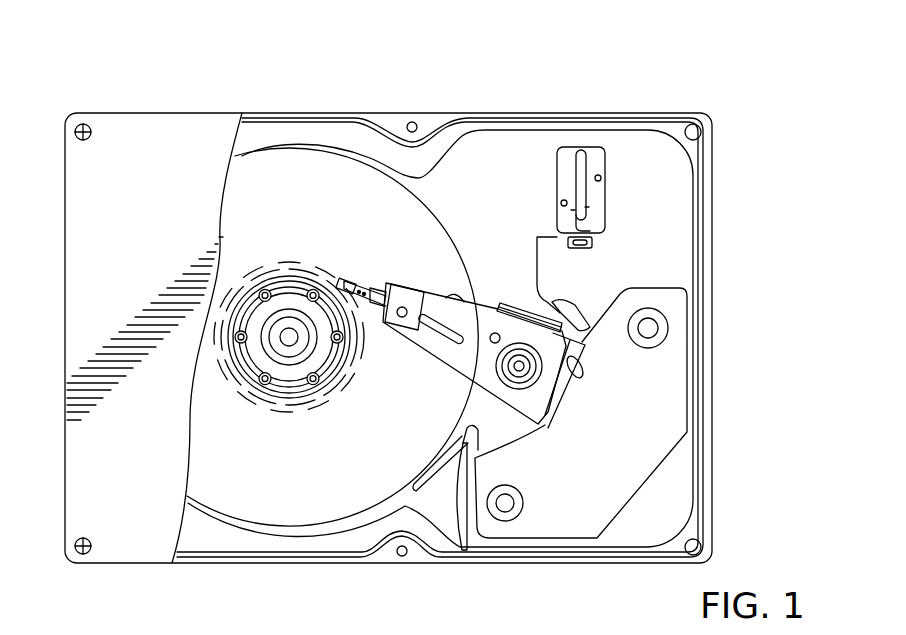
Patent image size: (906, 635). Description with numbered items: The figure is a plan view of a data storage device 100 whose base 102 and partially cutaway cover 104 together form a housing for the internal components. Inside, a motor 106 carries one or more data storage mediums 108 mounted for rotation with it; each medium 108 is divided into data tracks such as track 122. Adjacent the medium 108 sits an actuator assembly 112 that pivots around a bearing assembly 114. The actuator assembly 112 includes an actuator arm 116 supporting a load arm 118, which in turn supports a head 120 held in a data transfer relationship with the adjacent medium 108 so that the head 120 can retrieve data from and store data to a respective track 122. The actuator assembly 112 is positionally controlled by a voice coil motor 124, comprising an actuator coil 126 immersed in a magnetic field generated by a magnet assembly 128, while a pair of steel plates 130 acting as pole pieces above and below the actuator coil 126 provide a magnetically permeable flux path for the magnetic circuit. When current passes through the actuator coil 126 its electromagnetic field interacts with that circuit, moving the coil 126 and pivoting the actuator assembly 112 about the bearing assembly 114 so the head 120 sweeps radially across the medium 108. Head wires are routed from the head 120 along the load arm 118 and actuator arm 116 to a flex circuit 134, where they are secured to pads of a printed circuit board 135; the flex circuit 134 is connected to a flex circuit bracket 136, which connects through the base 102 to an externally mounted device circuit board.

The data storage device 100 is at (712, 94).
The base 102 is at (650, 188).
The cover 104 is at (213, 150).
The motor 106 is at (333, 366).
The data storage medium 108 is at (275, 538).
The actuator assembly 112 is at (452, 361).
The bearing assembly 114 is at (524, 394).
The actuator arm 116 is at (412, 322).
The load arm 118 is at (372, 290).
The head 120 is at (341, 280).
The data track 122 is at (273, 410).
The voice coil motor 124 is at (626, 527).
The actuator coil 126 is at (614, 288).
The magnet assembly 128 is at (672, 411).
The steel plates 130 is at (562, 518).
The flex circuit 134 is at (553, 228).
The printed circuit board 135 is at (524, 302).
The flex circuit bracket 136 is at (563, 160).